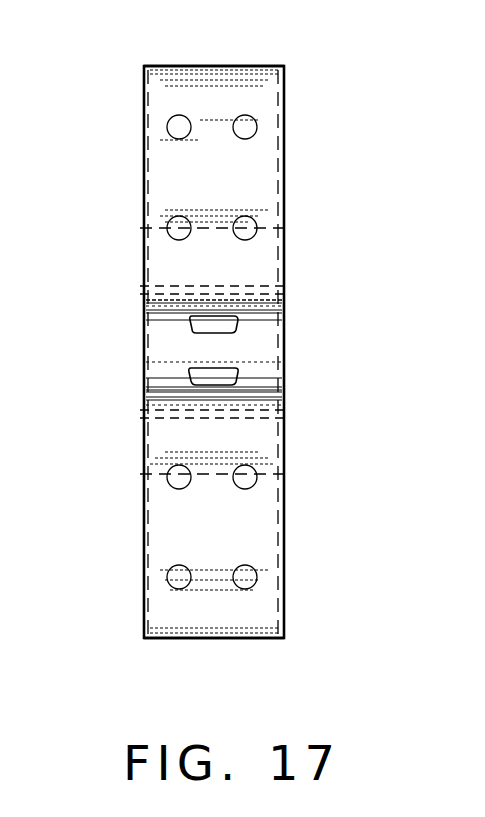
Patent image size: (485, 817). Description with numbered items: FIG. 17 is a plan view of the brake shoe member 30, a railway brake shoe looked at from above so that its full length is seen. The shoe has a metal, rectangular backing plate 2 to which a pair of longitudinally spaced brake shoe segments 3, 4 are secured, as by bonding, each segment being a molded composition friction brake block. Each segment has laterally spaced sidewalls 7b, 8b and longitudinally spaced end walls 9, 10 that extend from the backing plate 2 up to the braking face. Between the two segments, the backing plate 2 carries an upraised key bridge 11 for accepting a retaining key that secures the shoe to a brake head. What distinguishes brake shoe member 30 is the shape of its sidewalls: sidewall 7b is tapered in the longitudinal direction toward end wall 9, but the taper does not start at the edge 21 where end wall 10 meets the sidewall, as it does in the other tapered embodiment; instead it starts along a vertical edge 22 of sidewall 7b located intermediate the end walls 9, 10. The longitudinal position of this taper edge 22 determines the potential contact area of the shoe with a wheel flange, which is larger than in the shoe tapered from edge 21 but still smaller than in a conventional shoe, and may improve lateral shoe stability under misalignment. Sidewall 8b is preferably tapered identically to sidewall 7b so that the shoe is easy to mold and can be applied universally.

The brake shoe member 30 is at (300, 108).
The end wall 9 is at (213, 65).
The sidewall 8b is at (147, 160).
The sidewall 7b is at (280, 150).
The brake shoe segment 4 is at (200, 110).
The backing plate 2 is at (150, 249).
The brake shoe segment 3 is at (182, 518).
The vertical edge 22 is at (285, 228).
The end wall 10 is at (145, 289).
The key bridge 11 is at (209, 352).
The edge 21 is at (285, 390).